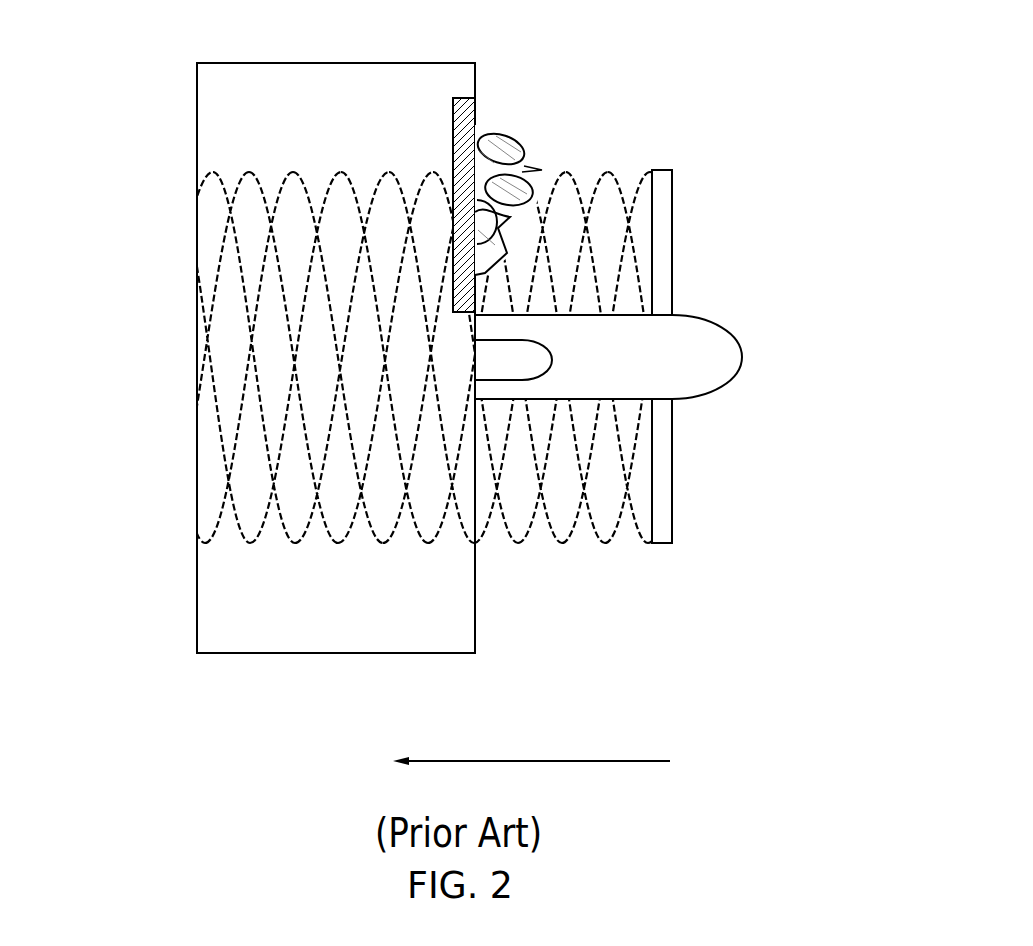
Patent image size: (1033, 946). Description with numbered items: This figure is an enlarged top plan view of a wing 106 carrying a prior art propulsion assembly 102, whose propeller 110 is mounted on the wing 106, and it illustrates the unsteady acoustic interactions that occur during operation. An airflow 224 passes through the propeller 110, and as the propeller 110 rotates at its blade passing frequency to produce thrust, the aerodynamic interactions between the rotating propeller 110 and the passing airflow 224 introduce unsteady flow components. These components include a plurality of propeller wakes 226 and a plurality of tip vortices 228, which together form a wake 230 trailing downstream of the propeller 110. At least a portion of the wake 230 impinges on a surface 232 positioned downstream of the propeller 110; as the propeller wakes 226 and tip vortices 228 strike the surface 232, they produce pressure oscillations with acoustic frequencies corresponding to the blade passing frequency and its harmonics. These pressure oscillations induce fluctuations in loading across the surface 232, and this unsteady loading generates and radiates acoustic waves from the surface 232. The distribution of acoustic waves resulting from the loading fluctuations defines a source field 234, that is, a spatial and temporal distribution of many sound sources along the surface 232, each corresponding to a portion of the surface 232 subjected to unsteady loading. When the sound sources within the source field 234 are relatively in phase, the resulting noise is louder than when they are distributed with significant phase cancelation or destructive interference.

The propulsion assembly 102 is at (598, 49).
The wing 106 is at (198, 68).
The propeller 110 is at (672, 500).
The airflow 224 is at (548, 758).
The plurality of propeller wakes 226 is at (564, 222).
The plurality of tip vortices 228 is at (623, 172).
The wake 230 is at (360, 338).
The surface 232 is at (478, 98).
The source field 234 is at (518, 135).